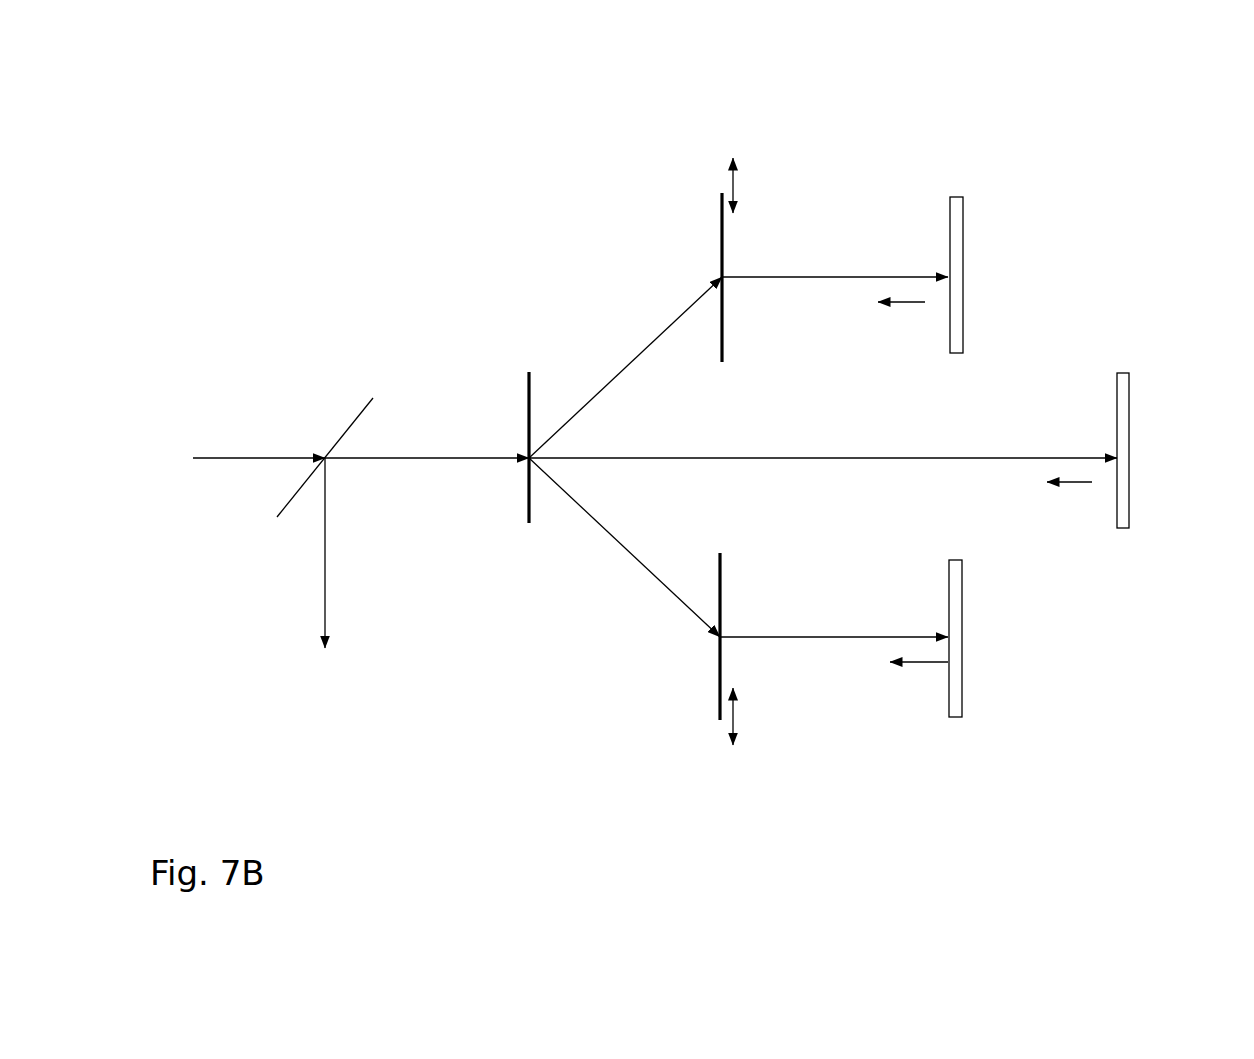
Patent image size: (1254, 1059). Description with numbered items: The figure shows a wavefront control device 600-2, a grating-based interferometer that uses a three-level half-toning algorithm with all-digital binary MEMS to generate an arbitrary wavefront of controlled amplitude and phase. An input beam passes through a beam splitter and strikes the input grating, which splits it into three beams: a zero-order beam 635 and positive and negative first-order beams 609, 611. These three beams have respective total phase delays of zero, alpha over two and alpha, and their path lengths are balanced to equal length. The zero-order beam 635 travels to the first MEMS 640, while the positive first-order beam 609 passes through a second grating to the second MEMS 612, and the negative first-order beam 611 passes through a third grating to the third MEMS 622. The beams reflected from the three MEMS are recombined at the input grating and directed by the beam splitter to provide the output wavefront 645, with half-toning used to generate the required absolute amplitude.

The wavefront control device 600-2 is at (265, 85).
The positive first-order output beam 609 is at (738, 367).
The negative first-order output beam 611 is at (738, 560).
The digital binary MEMS device 612 is at (980, 263).
The digital binary MEMS device 622 is at (979, 650).
The zero-order beam 635 is at (823, 454).
The MEMS device 640 is at (1154, 450).
The output wavefront 645 is at (350, 553).